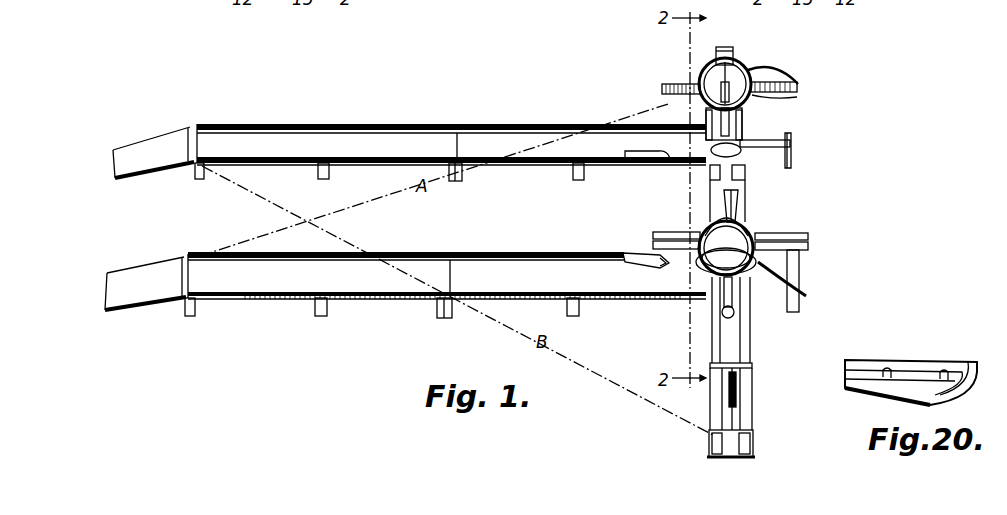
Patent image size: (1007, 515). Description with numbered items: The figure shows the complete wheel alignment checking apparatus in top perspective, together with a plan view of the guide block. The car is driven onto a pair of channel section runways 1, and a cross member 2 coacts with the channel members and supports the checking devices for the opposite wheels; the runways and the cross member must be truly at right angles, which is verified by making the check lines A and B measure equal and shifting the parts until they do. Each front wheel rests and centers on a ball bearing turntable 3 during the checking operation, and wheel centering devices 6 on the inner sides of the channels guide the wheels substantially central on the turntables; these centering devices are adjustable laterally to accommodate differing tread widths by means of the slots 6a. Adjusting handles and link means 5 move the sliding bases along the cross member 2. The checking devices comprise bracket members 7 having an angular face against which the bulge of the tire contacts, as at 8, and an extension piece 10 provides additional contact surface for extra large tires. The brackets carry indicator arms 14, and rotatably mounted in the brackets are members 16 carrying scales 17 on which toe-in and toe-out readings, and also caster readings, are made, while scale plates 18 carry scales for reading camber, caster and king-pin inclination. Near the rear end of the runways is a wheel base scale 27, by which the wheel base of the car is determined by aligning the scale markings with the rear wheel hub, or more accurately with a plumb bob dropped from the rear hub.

In FIG. 1, the channel section runway 1 is at (396, 150).
In FIG. 1, the cross member 2 is at (790, 173).
In FIG. 1, the ball bearing turntable 3 is at (742, 147).
In FIG. 1, the adjusting handles and link means 5 is at (740, 386).
In FIG. 1, the wheel centering device 6 is at (655, 158).
In FIG. 20, the wheel centering device 6 is at (900, 394).
In FIG. 20, the slots 6a is at (889, 370).
In FIG. 1, the bracket member 7 is at (707, 118).
In FIG. 1, the angular face contact point 8 is at (667, 125).
In FIG. 1, the extension piece 10 is at (734, 60).
In FIG. 1, the indicator arm 14 is at (790, 98).
In FIG. 1, the rotatable member 16 is at (698, 80).
In FIG. 1, the scale 17 is at (788, 80).
In FIG. 1, the scale plate 18 is at (712, 288).
In FIG. 1, the wheel base scale 27 is at (284, 125).